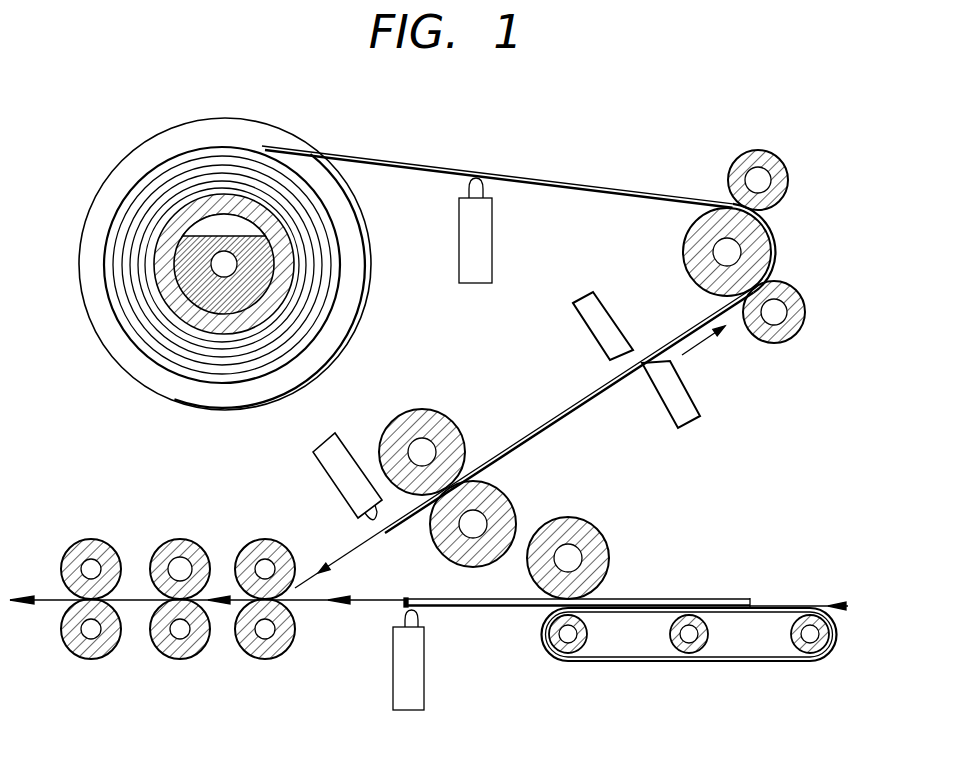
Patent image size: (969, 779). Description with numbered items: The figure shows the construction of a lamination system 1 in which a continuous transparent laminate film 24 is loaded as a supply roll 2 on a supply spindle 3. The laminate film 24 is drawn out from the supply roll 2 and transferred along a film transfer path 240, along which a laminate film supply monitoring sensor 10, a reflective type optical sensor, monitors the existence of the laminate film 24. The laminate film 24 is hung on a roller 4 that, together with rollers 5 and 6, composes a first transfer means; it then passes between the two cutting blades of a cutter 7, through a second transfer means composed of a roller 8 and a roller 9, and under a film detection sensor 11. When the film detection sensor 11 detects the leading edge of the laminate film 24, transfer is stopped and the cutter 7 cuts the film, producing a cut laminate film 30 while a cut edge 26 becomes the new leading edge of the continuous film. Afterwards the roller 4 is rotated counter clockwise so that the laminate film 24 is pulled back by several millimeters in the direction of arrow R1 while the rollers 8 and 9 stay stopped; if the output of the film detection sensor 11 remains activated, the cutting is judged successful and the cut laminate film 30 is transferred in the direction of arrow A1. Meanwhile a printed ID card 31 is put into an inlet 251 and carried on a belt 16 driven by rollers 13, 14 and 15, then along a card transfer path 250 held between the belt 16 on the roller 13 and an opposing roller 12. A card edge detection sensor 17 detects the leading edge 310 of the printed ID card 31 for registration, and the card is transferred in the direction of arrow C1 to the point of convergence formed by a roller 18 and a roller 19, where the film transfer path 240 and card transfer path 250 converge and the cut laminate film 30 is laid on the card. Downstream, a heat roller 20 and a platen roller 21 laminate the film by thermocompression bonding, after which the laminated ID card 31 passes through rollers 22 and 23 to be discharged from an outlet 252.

The lamination system 1 is at (276, 70).
The supply roll 2 is at (176, 166).
The supply spindle 3 is at (98, 190).
The roller 4 is at (690, 238).
The roller 5 is at (767, 151).
The roller 6 is at (790, 336).
The cutter 7 is at (693, 425).
The roller 8 is at (418, 413).
The roller 9 is at (503, 494).
The laminate film supply monitoring sensor 10 is at (461, 236).
The film detection sensor 11 is at (342, 444).
The roller 12 is at (598, 530).
The roller 13 is at (570, 655).
The roller 14 is at (692, 655).
The roller 15 is at (822, 661).
The belt 16 is at (620, 664).
The card edge detection sensor 17 is at (411, 697).
The roller 18 is at (265, 540).
The roller 19 is at (268, 658).
The heat roller 20 is at (180, 540).
The platen roller 21 is at (186, 658).
The roller 22 is at (91, 540).
The roller 23 is at (97, 658).
The laminate film 24 is at (660, 186).
The cut edge 26 is at (640, 352).
The cut laminate film 30 is at (562, 412).
The printed ID card 31 is at (704, 598).
The film transfer path 240 is at (376, 538).
The card transfer path 250 is at (375, 600).
The inlet 251 is at (832, 605).
The outlet 252 is at (35, 598).
The leading edge of the printed ID card 310 is at (411, 598).
The arrow A1 is at (328, 562).
The arrow C1 is at (352, 604).
The arrow R1 is at (708, 349).